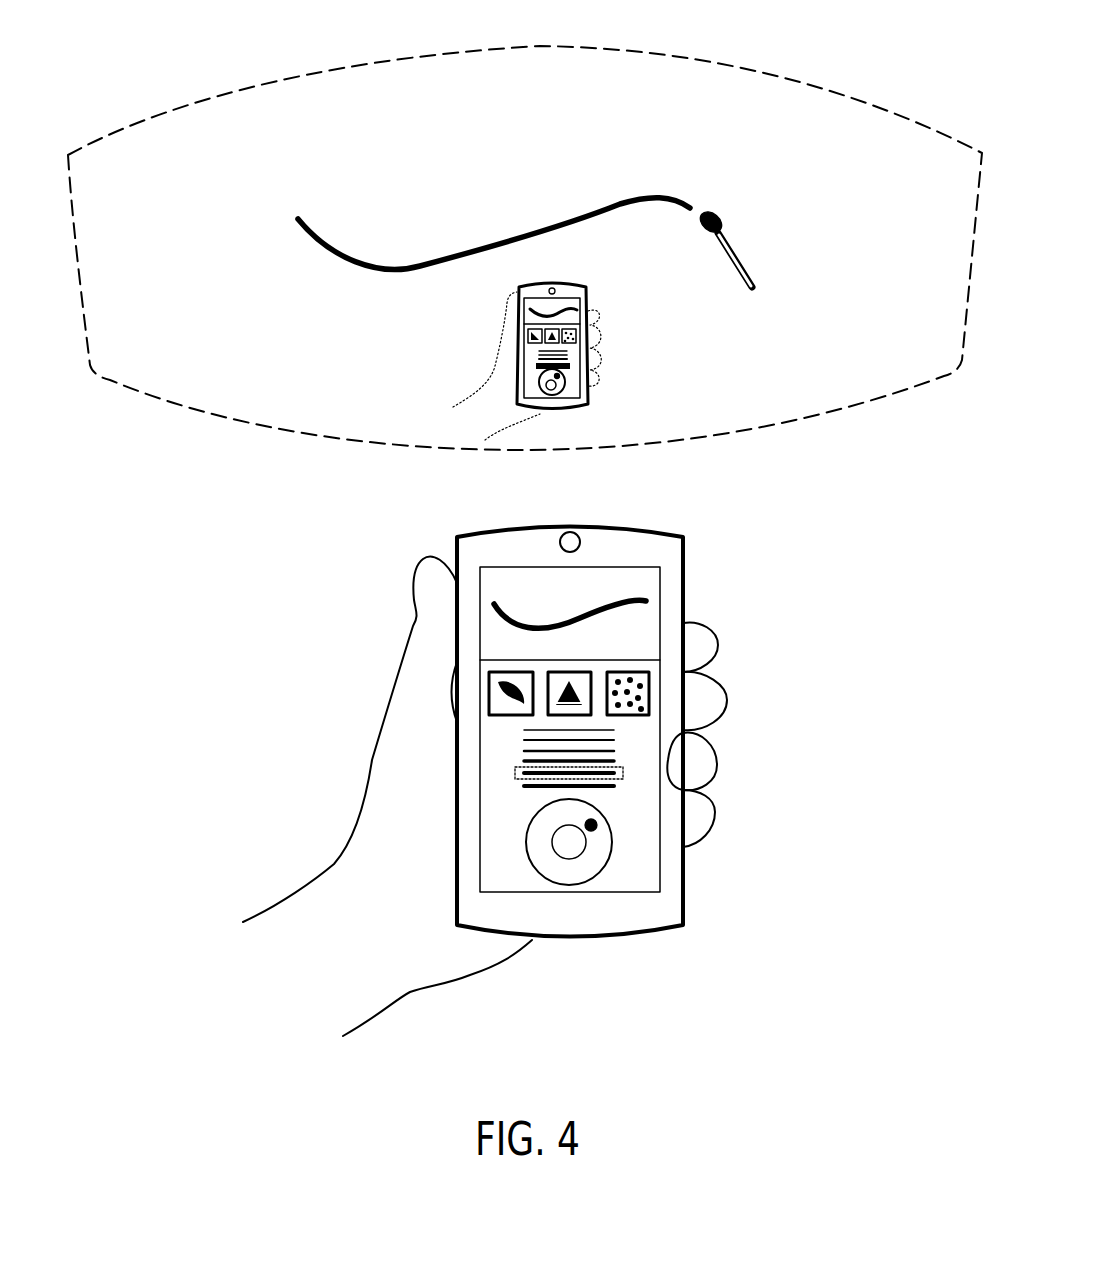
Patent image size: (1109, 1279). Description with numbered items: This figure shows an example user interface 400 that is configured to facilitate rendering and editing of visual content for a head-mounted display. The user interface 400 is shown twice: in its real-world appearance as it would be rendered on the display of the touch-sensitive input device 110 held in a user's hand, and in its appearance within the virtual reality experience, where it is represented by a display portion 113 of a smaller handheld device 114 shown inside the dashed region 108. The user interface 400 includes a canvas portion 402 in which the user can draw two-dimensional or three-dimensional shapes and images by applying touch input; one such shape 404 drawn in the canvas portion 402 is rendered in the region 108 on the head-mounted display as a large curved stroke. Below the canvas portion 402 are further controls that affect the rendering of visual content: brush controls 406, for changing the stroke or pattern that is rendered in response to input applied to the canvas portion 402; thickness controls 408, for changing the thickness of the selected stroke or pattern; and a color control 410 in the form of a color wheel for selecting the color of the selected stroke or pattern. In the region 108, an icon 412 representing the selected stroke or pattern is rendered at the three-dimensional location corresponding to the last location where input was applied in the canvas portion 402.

The region 108 is at (537, 46).
The shape 404 is at (403, 270).
The icon 412 is at (738, 300).
The mobile device 114 is at (588, 303).
The display portion 113 is at (570, 397).
The user interface 400 is at (612, 553).
The canvas portion 402 is at (497, 567).
The brush controls 406 is at (505, 728).
The thickness controls 408 is at (644, 759).
The color control 410 is at (530, 832).
The touch-sensitive input device 110 is at (714, 566).